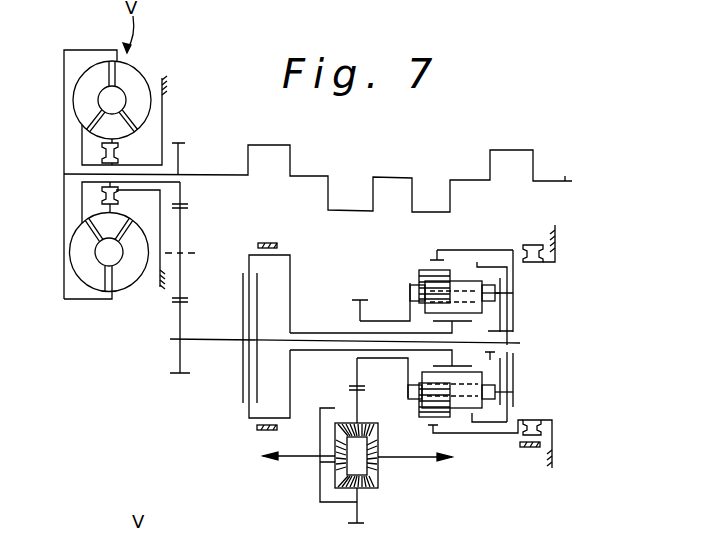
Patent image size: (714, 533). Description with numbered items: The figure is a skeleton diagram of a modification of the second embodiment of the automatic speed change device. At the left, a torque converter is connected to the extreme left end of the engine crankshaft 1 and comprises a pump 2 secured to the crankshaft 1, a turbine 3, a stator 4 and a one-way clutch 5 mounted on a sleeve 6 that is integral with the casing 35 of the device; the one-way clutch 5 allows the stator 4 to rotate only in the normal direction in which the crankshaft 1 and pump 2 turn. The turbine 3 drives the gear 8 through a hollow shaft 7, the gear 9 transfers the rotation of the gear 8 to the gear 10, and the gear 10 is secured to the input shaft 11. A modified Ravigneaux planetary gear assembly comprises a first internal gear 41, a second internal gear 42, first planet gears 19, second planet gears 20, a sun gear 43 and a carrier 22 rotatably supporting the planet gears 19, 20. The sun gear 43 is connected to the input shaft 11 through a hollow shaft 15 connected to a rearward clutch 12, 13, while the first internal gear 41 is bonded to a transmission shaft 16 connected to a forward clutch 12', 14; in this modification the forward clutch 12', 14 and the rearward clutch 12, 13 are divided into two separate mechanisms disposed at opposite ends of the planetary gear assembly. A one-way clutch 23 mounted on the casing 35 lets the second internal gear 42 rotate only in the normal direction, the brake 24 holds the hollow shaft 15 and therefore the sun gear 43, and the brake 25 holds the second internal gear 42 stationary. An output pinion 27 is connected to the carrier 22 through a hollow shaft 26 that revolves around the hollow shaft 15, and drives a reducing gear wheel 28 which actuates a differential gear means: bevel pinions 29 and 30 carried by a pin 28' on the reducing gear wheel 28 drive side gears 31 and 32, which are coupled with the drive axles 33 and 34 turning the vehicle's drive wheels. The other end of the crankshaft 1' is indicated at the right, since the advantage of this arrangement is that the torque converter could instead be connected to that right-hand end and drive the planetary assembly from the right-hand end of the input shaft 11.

The engine crankshaft 1 is at (318, 164).
The output shaft 1' is at (572, 150).
The pump 2 is at (133, 80).
The turbine 3 is at (88, 75).
The stator 4 is at (103, 133).
The one-way clutch 5 is at (100, 157).
The sleeve 6 is at (143, 163).
The hollow shaft 7 is at (178, 152).
The transmission gear 8 is at (184, 193).
The transmission gear 9 is at (181, 238).
The transmission gear 10 is at (175, 325).
The input shaft 11 is at (203, 341).
The rearward clutch 12 is at (241, 336).
The forward clutch 12' is at (535, 386).
The rearward clutch 13 is at (243, 295).
The forward clutch 14 is at (507, 312).
The hollow shaft 15 is at (300, 326).
The transmission shaft 16 is at (493, 258).
The first planet gears 19 is at (500, 390).
The second planet gears 20 is at (443, 417).
The carrier 22 is at (500, 292).
The one-way clutch 23 is at (550, 258).
The brake 24 is at (272, 240).
The brake 25 is at (533, 244).
The hollow shaft 26 is at (383, 319).
The output pinion 27 is at (349, 297).
The reducing gear wheel 28 is at (328, 388).
The pin 28' is at (381, 390).
The bevel pinion 29 is at (380, 421).
The bevel pinion 30 is at (372, 490).
The side gear 31 is at (338, 470).
The side gear 32 is at (378, 473).
The drive axle 33 is at (288, 460).
The drive axle 34 is at (427, 460).
The casing 35 is at (166, 84).
The first internal gear 41 is at (477, 262).
The second internal gear 42 is at (437, 252).
The sun gear 43 is at (500, 330).